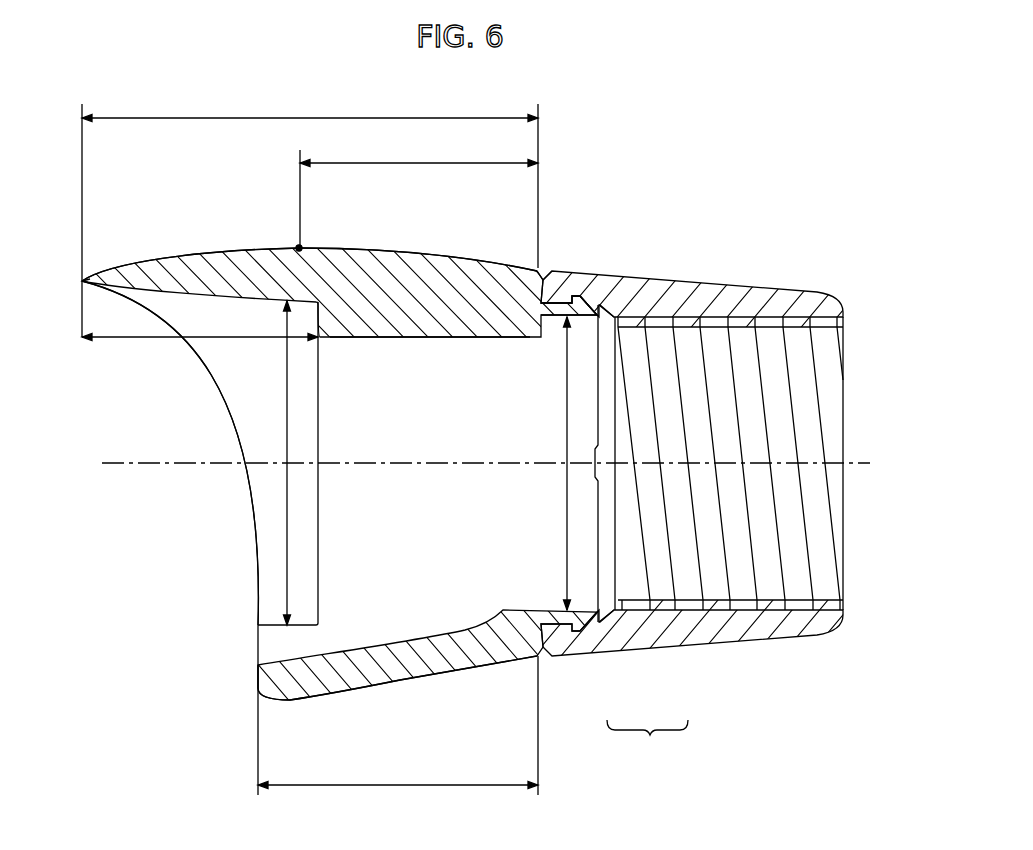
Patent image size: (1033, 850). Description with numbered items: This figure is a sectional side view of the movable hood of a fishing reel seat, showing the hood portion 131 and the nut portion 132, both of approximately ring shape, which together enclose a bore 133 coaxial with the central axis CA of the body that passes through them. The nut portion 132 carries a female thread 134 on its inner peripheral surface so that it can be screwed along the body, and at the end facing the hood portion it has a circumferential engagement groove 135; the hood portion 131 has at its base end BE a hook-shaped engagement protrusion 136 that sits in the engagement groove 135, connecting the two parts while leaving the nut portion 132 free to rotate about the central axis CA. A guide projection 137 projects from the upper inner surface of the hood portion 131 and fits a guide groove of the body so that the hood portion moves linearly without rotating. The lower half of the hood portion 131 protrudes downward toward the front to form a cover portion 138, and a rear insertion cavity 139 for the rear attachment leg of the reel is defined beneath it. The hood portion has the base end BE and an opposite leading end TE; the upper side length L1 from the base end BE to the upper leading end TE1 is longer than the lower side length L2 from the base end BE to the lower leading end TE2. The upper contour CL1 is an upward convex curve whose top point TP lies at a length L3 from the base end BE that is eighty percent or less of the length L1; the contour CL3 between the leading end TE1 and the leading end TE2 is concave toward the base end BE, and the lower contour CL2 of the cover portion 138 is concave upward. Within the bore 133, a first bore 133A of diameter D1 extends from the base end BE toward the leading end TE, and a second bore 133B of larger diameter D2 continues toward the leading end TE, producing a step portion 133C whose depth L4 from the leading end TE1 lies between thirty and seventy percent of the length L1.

The hood portion 131 is at (434, 253).
The nut portion 132 is at (720, 293).
The bore 133 is at (647, 742).
The first bore 133A is at (596, 570).
The second bore 133B is at (304, 510).
The step portion 133C is at (291, 248).
The female thread 134 is at (782, 345).
The engagement groove 135 is at (564, 293).
The engagement protrusion 136 is at (586, 300).
The guide projection 137 is at (410, 338).
The cover portion 138 is at (328, 678).
The rear insertion cavity 139 is at (277, 643).
The top point TP is at (301, 248).
The base end BE is at (532, 279).
The leading end TE is at (237, 501).
The leading end of the upper side TE1 is at (78, 284).
The leading end of the lower side TE2 is at (254, 680).
The upper contour CL1 is at (208, 254).
The contour of the lower side CL2 is at (398, 681).
The contour between leading ends CL3 is at (204, 387).
The central axis CA is at (469, 465).
The length of the upper side L1 is at (310, 216).
The length of the lower side L2 is at (398, 725).
The length from base end to top point L3 is at (419, 194).
The depth of the step portion L4 is at (200, 349).
The diameter of the first bore D1 is at (552, 463).
The diameter of the second bore D2 is at (271, 463).